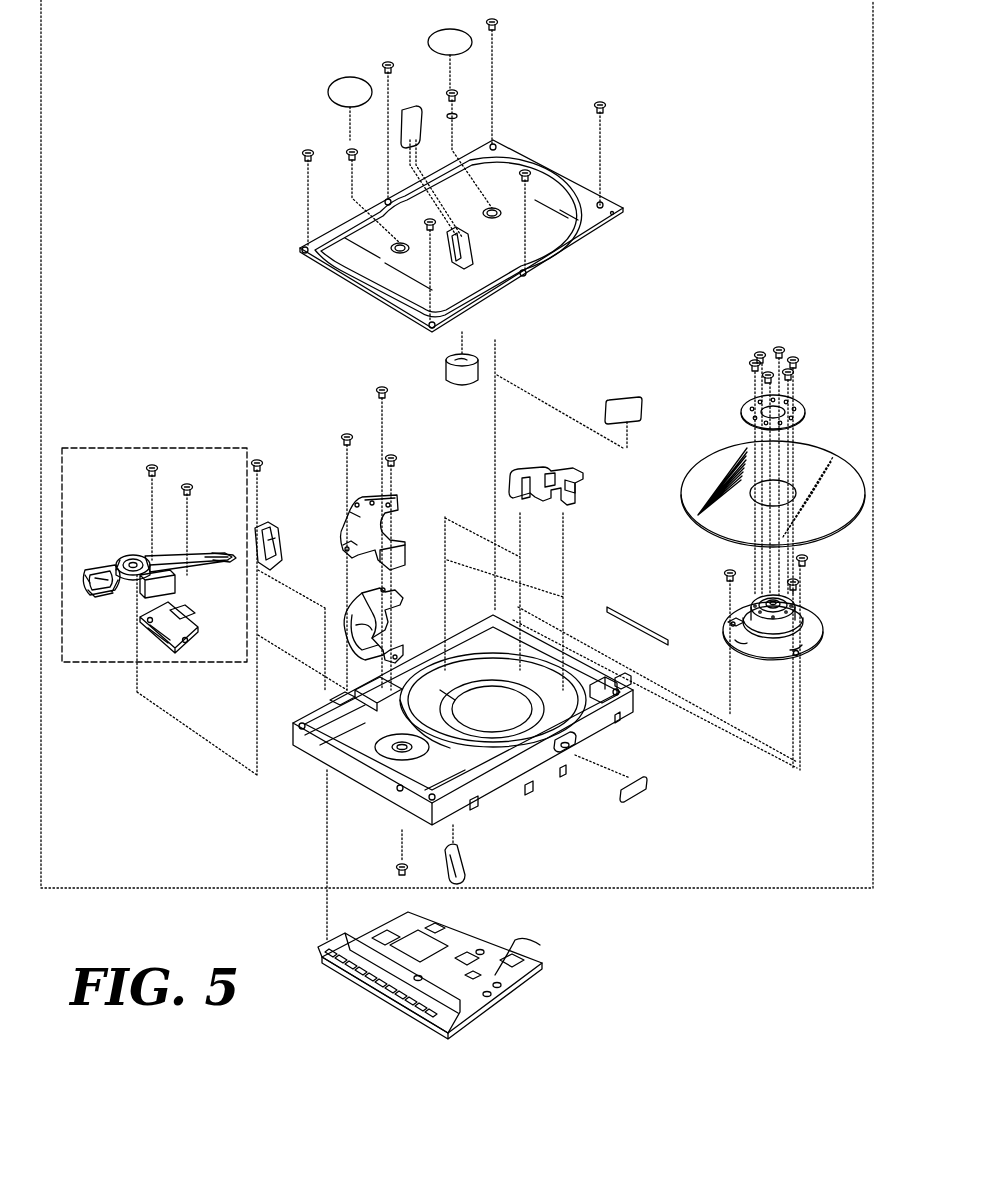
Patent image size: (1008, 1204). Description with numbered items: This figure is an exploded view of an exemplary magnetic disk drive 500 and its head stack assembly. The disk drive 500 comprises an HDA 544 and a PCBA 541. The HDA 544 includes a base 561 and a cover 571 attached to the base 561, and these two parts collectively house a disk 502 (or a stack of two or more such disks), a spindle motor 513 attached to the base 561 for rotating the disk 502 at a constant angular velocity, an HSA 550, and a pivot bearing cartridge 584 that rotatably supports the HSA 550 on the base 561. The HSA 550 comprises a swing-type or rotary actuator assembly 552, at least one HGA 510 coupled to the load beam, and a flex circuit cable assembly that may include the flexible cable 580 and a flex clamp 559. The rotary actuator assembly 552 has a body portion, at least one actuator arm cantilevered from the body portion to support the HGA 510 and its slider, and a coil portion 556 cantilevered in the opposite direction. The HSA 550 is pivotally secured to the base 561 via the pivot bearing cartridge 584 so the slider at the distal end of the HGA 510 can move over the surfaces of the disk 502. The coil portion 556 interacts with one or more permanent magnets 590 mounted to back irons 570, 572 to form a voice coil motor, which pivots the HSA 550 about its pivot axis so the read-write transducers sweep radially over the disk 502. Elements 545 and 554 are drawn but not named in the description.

The magnetic disk drive 500 is at (722, 910).
The disk 502 is at (708, 465).
The HGA 510 is at (215, 558).
The spindle motor 513 is at (717, 603).
The PCBA 541 is at (487, 1007).
The HDA 544 is at (618, 890).
The actuator pivot 545 is at (152, 563).
The HSA 550 is at (172, 593).
The rotary actuator assembly 552 is at (157, 557).
The latch 554 is at (228, 550).
The coil portion 556 is at (87, 593).
The flex clamp 559 is at (198, 627).
The base 561 is at (517, 790).
The back iron 570 is at (342, 527).
The cover 571 is at (588, 235).
The back iron 572 is at (397, 603).
The flexible cable 580 is at (170, 588).
The pivot bearing cartridge 584 is at (118, 558).
The permanent magnet 590 is at (362, 627).